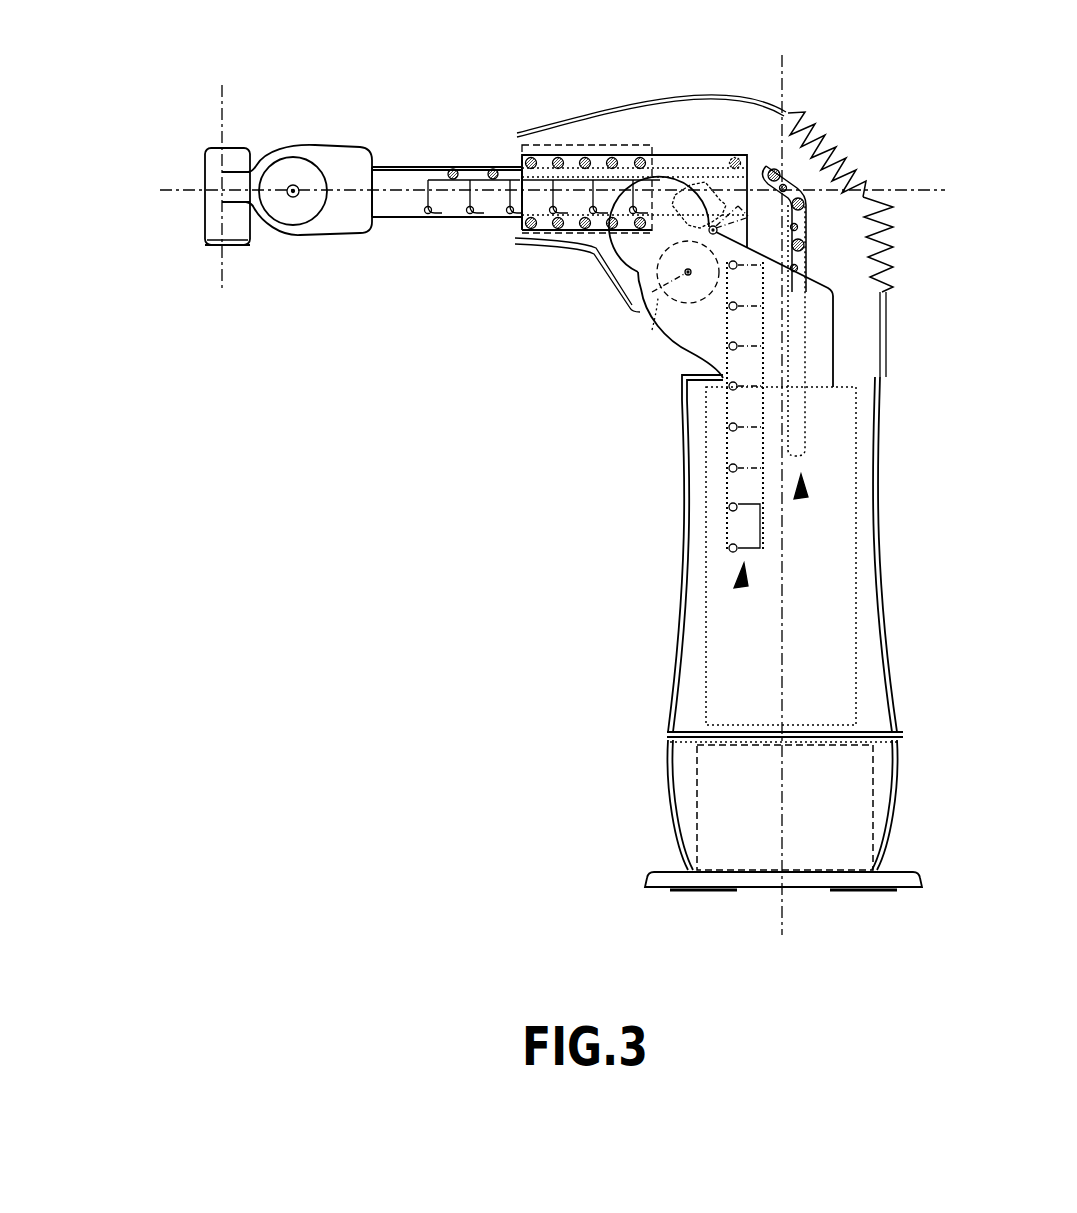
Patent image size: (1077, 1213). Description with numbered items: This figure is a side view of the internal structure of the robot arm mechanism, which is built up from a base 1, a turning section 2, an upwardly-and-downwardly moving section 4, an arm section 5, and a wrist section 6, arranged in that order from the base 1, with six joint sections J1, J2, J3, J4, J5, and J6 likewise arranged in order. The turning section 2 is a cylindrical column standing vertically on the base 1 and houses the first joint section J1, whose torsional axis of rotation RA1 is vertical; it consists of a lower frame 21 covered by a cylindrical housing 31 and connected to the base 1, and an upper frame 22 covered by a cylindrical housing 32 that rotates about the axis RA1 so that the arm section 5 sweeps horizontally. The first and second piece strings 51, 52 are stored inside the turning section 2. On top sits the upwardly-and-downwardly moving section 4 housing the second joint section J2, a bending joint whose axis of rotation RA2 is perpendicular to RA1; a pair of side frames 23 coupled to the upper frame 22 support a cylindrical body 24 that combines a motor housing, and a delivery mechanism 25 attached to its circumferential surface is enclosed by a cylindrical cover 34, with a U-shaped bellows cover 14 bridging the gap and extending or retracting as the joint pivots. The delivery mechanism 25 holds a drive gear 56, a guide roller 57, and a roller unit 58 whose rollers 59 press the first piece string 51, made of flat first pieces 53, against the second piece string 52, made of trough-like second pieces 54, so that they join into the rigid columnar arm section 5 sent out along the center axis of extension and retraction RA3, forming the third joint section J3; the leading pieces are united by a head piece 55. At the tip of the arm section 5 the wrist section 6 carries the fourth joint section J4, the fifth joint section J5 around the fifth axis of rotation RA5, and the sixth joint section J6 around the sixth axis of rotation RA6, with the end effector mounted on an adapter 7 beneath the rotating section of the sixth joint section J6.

The base 1 is at (921, 876).
The turning section 2 is at (901, 552).
The upwardly-and-downwardly moving section 4 is at (863, 149).
The arm section 5 is at (488, 150).
The wrist section 6 is at (314, 132).
The adapter 7 is at (240, 250).
The U-shaped bellows cover 14 is at (872, 228).
The lower frame 21 is at (692, 752).
The upper frame 22 is at (692, 397).
The side frames 23 is at (677, 344).
The cylindrical body 24 is at (652, 330).
The delivery mechanism 25 is at (598, 242).
The housing 31 is at (676, 812).
The housing 32 is at (681, 655).
The cover 34 is at (598, 122).
The first piece string 51 is at (812, 497).
The second piece string 52 is at (741, 585).
The first piece 53 is at (806, 430).
The second piece 54 is at (727, 516).
The head piece 55 is at (403, 220).
The drive gear 56 is at (705, 185).
The guide roller 57 is at (735, 166).
The roller unit 58 is at (624, 142).
The rollers 59 is at (527, 172).
The first joint section J1 is at (913, 734).
The second joint section J2 is at (634, 305).
The third joint section J3 is at (514, 229).
The fourth joint section J4 is at (381, 156).
The fifth joint section J5 is at (288, 238).
The sixth joint section J6 is at (206, 247).
The axis of rotation RA1 is at (780, 482).
The axis of rotation RA2 is at (652, 292).
The center axis of extension and retraction RA3 is at (314, 190).
The fifth axis of rotation RA5 is at (297, 194).
The sixth axis of rotation RA6 is at (221, 175).